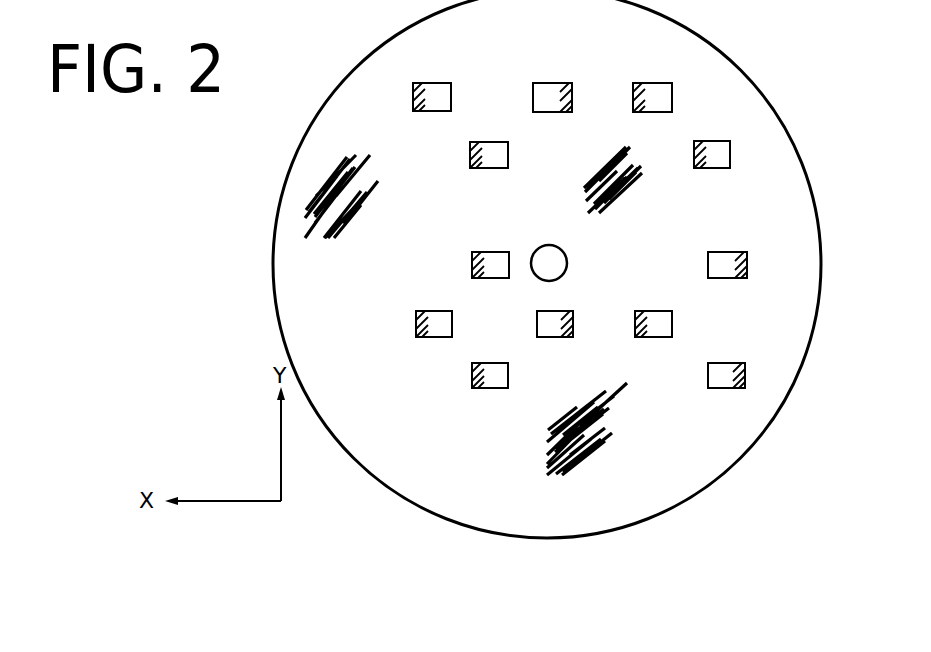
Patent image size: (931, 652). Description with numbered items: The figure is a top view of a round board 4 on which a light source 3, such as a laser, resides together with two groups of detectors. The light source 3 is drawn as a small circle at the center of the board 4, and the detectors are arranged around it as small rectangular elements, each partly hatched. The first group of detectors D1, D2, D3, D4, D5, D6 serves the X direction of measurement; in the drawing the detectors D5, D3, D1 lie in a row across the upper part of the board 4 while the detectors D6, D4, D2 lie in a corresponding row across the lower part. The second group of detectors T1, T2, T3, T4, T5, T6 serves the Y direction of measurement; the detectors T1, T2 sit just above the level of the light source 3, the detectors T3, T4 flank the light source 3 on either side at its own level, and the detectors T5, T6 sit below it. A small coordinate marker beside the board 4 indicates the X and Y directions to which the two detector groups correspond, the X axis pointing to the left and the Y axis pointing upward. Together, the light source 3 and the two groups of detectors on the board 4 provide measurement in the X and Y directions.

The light source 3 is at (559, 257).
The board 4 is at (812, 267).
The detector D1 is at (655, 96).
The detector D2 is at (657, 323).
The detector D3 is at (544, 96).
The detector D4 is at (553, 323).
The detector D5 is at (440, 96).
The detector D6 is at (437, 323).
The detector T1 is at (492, 153).
The detector T2 is at (714, 152).
The detector T3 is at (494, 266).
The detector T4 is at (721, 262).
The detector T5 is at (492, 375).
The detector T6 is at (724, 375).